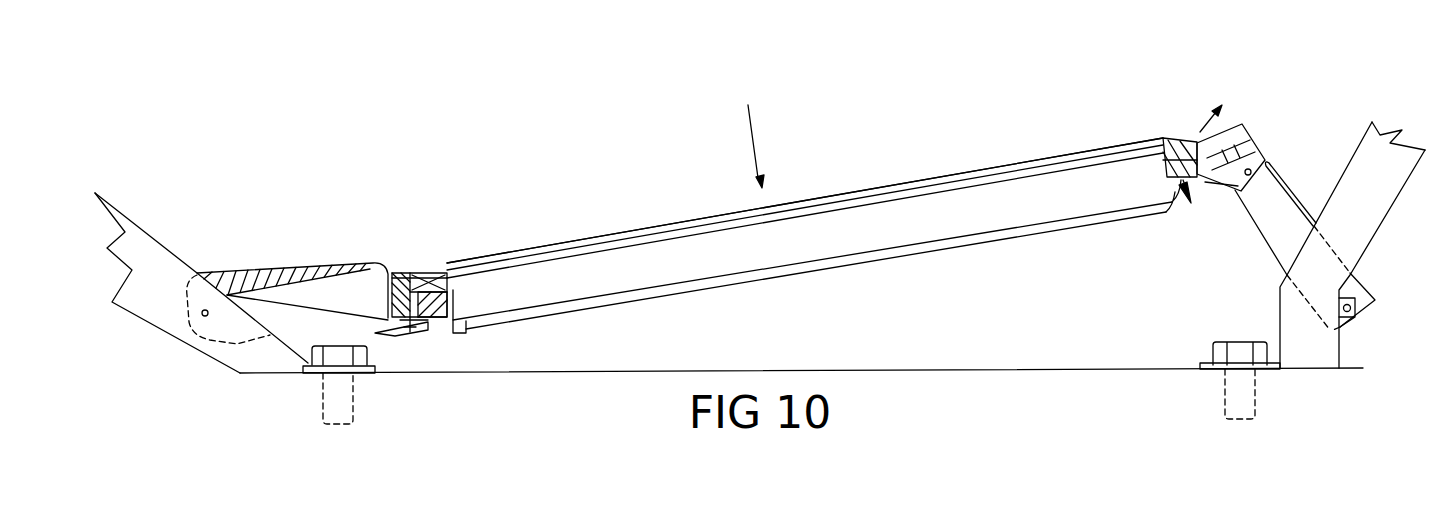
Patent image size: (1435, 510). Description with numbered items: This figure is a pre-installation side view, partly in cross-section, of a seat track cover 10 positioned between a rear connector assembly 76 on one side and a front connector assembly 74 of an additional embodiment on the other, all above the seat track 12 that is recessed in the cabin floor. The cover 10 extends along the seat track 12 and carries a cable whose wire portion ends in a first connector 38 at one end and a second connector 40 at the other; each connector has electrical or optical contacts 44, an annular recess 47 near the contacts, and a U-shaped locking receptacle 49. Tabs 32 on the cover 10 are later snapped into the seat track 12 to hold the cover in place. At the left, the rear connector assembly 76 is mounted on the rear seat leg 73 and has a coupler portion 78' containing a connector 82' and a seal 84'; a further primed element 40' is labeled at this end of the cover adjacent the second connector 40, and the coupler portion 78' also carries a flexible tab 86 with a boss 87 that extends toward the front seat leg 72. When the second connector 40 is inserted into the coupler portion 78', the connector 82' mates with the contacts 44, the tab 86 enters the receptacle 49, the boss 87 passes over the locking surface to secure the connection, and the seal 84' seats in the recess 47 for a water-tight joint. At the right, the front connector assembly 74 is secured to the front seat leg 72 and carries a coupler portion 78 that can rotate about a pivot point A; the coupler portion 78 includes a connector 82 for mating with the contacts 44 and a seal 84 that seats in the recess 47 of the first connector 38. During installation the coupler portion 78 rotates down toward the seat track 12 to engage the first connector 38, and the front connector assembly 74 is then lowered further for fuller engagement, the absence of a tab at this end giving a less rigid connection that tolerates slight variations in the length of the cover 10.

The seat track cover 10 is at (830, 185).
The seat track 12 is at (1352, 368).
The tabs 32 is at (832, 268).
The first connector 38 is at (1175, 137).
The second connector 40 is at (451, 330).
The upper block 40' is at (485, 256).
The electrical/optical contacts 44 is at (452, 328).
The annular recesses 47 is at (1183, 180).
The locking receptacles 49 is at (425, 330).
The front seat leg 72 is at (1383, 178).
The rear seat leg 73 is at (153, 258).
The front connector assembly 74 is at (1300, 175).
The rear connector assembly 76 is at (292, 263).
The coupler portion 78 is at (1231, 115).
The coupler portion 78' is at (403, 260).
The connector 82 is at (1193, 221).
The connector 82' is at (453, 250).
The seal 84 is at (1204, 102).
The seal 84' is at (377, 251).
The tab 86 is at (393, 325).
The boss 87 is at (410, 332).
The pivot point A is at (1267, 165).